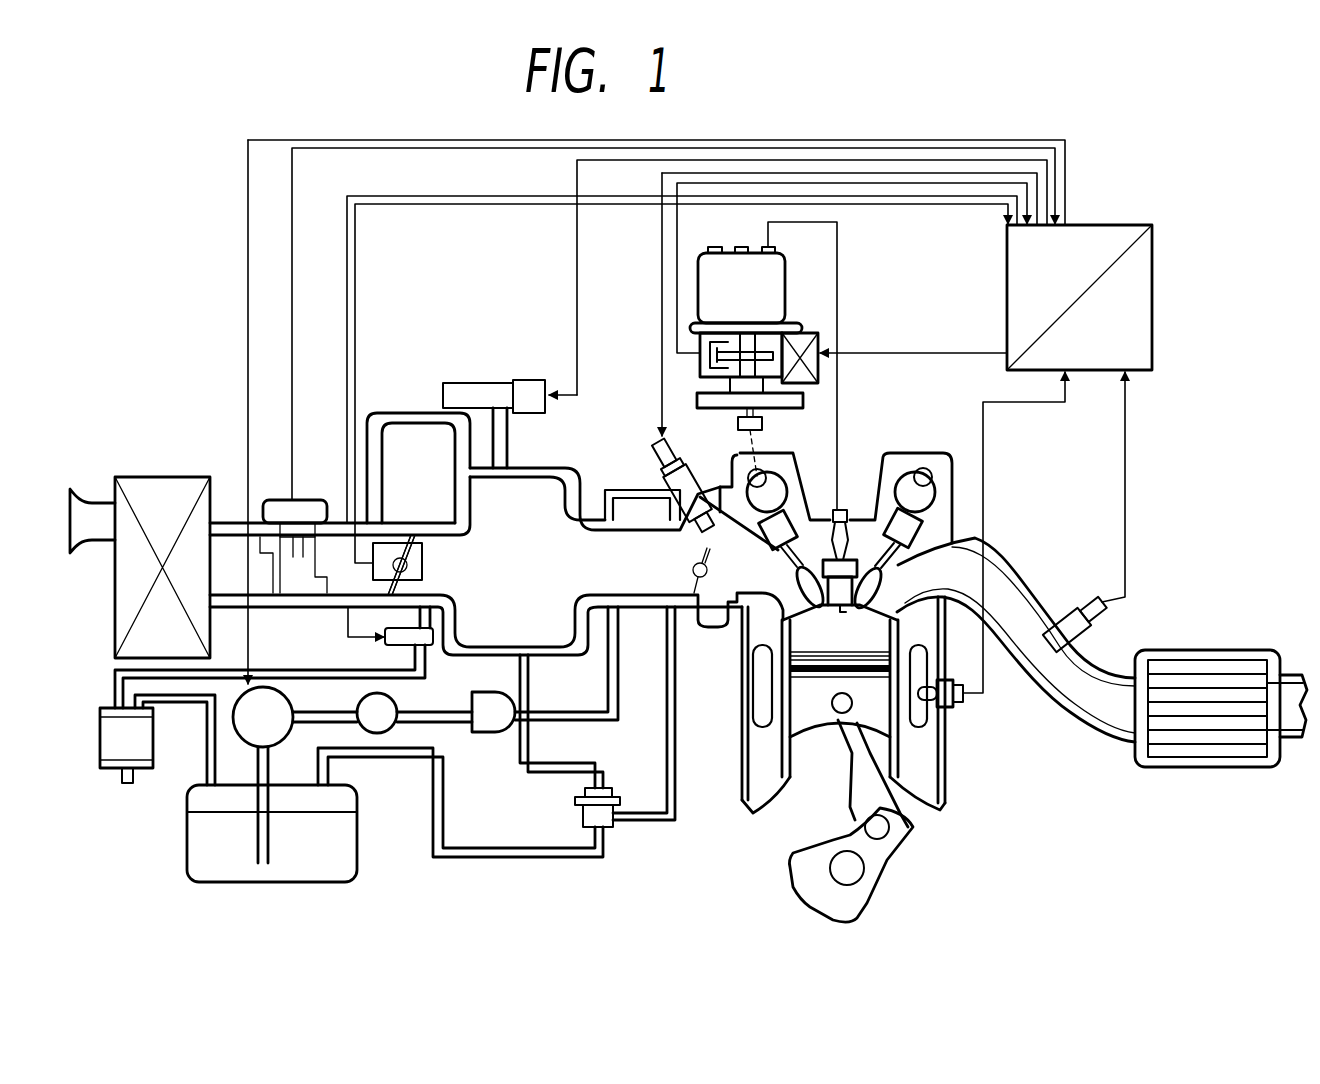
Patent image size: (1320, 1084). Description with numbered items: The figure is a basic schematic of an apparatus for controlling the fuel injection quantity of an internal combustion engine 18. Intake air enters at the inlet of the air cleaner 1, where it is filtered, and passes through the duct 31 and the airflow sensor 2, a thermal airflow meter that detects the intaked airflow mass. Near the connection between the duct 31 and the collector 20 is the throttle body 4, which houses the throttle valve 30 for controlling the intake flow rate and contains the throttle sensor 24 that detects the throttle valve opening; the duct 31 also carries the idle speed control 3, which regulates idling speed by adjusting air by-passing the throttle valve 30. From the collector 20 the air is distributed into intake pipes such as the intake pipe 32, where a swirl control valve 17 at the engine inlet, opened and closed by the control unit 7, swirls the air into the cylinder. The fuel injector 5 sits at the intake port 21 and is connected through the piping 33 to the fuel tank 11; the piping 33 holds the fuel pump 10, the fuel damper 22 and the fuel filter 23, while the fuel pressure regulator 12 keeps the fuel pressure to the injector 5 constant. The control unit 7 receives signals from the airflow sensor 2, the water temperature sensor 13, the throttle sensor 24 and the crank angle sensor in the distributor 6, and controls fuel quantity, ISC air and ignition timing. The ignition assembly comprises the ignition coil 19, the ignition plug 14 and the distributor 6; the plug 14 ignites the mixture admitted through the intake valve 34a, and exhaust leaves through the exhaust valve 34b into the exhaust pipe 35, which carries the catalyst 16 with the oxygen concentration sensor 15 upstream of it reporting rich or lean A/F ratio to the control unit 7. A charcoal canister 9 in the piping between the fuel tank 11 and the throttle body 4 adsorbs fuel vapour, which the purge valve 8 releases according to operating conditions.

The air cleaner 1 is at (200, 477).
The airflow sensor 2 is at (300, 500).
The idle speed control 3 is at (480, 383).
The throttle body 4 is at (435, 534).
The fuel injector 5 is at (648, 445).
The distributor 6 is at (787, 272).
The control unit 7 is at (1118, 225).
The purge valve 8 is at (435, 648).
The charcoal canister 9 is at (106, 768).
The fuel pump 10 is at (296, 705).
The fuel tank 11 is at (358, 845).
The fuel pressure regulator 12 is at (618, 830).
The water temperature sensor 13 is at (962, 698).
The ignition plug 14 is at (840, 508).
The oxygen concentration sensor 15 is at (1093, 604).
The catalyst 16 is at (1242, 650).
The swirl control valve 17 is at (705, 598).
The internal combustion engine 18 is at (942, 772).
The ignition coil 19 is at (820, 337).
The collector 20 is at (550, 466).
The intake port 21 is at (702, 492).
The fuel damper 22 is at (388, 736).
The fuel filter 23 is at (498, 735).
The throttle sensor 24 is at (423, 565).
The throttle valve 30 is at (395, 542).
The duct 31 is at (230, 522).
The intake pipe 32 is at (636, 612).
The piping 33 is at (590, 722).
The intake valve 34a is at (777, 592).
The exhaust valve 34b is at (895, 582).
The exhaust pipe 35 is at (1068, 725).